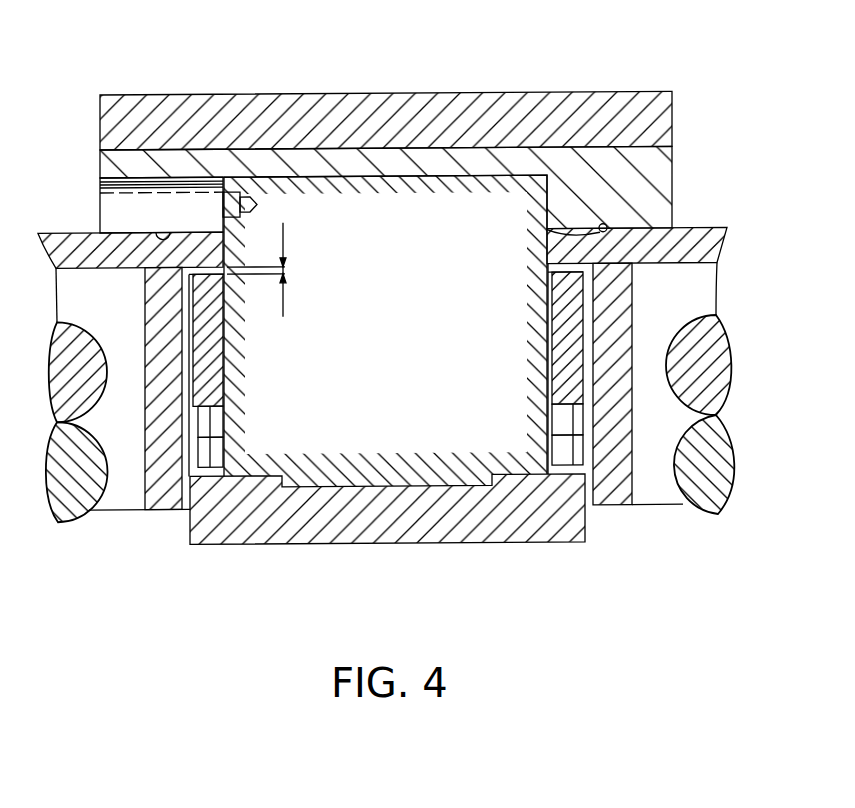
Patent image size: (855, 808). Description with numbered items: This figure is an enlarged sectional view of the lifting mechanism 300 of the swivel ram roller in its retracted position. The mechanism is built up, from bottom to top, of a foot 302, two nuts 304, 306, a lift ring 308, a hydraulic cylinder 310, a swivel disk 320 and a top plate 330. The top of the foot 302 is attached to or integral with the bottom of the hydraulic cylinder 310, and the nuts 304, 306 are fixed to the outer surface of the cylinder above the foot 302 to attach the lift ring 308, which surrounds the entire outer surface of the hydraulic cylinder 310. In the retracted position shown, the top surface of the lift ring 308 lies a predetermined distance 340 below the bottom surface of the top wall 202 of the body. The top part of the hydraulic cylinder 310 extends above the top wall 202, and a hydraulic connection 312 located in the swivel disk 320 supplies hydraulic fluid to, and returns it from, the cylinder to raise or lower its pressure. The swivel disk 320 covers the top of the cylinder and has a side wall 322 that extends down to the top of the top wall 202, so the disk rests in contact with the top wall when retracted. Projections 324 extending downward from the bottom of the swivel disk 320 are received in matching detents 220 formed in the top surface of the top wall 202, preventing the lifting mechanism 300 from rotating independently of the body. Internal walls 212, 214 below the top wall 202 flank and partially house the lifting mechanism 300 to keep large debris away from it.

The top wall 202 is at (712, 241).
The internal wall 212 is at (611, 493).
The internal wall 214 is at (160, 499).
The detents 220 is at (386, 397).
The lifting mechanism 300 is at (326, 412).
The foot 302 is at (388, 534).
The nut 304 is at (565, 450).
The nut 306 is at (565, 420).
The lift ring 308 is at (563, 324).
The hydraulic cylinder 310 is at (401, 352).
The hydraulic connection 312 is at (112, 212).
The swivel disk 320 is at (447, 160).
The side wall 322 is at (615, 179).
The projections 324 is at (582, 239).
The top plate 330 is at (398, 135).
The predetermined distance 340 is at (285, 271).